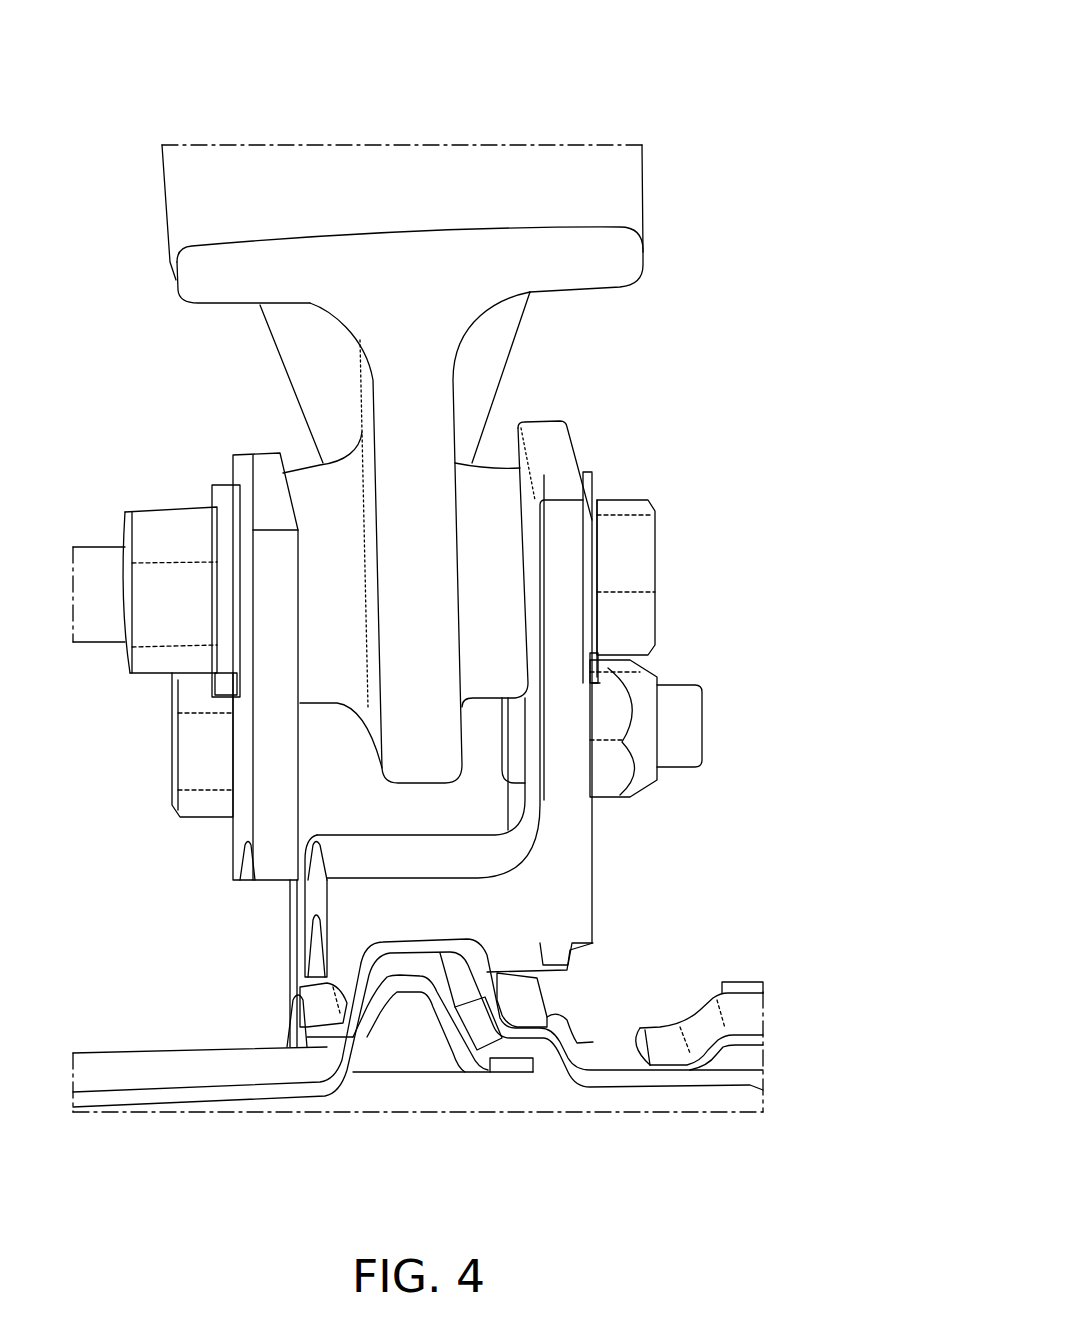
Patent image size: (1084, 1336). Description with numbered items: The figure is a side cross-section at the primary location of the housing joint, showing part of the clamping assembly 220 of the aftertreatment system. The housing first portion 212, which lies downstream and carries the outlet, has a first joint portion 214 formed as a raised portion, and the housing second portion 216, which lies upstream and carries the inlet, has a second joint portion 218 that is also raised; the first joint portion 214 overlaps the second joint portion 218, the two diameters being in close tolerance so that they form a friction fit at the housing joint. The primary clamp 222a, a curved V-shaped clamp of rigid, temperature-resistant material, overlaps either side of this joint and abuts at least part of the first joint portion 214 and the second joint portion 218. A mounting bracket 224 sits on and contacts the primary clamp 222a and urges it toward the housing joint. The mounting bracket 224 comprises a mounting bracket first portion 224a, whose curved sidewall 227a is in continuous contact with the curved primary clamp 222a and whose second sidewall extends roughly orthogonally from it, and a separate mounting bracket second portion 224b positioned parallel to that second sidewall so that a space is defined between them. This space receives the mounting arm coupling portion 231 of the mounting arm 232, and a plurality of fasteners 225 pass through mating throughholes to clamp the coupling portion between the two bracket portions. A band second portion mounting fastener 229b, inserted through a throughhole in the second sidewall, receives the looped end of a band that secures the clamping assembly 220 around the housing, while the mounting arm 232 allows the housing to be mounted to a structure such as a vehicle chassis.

The housing first portion 212 is at (635, 1050).
The first joint portion 214 is at (520, 1042).
The housing second portion 216 is at (133, 1070).
The second joint portion 218 is at (482, 1060).
The clamping assembly 220 is at (700, 76).
The primary clamp 222a is at (500, 1000).
The mounting bracket 224 is at (606, 850).
The mounting bracket first portion 224a is at (582, 912).
The mounting bracket second portion 224b is at (265, 812).
The fasteners 225 is at (640, 570).
The curved sidewall 227a is at (307, 893).
The band second portion mounting fastener 229b is at (645, 728).
The mounting arm coupling portion 231 is at (418, 630).
The mounting arm 232 is at (593, 253).